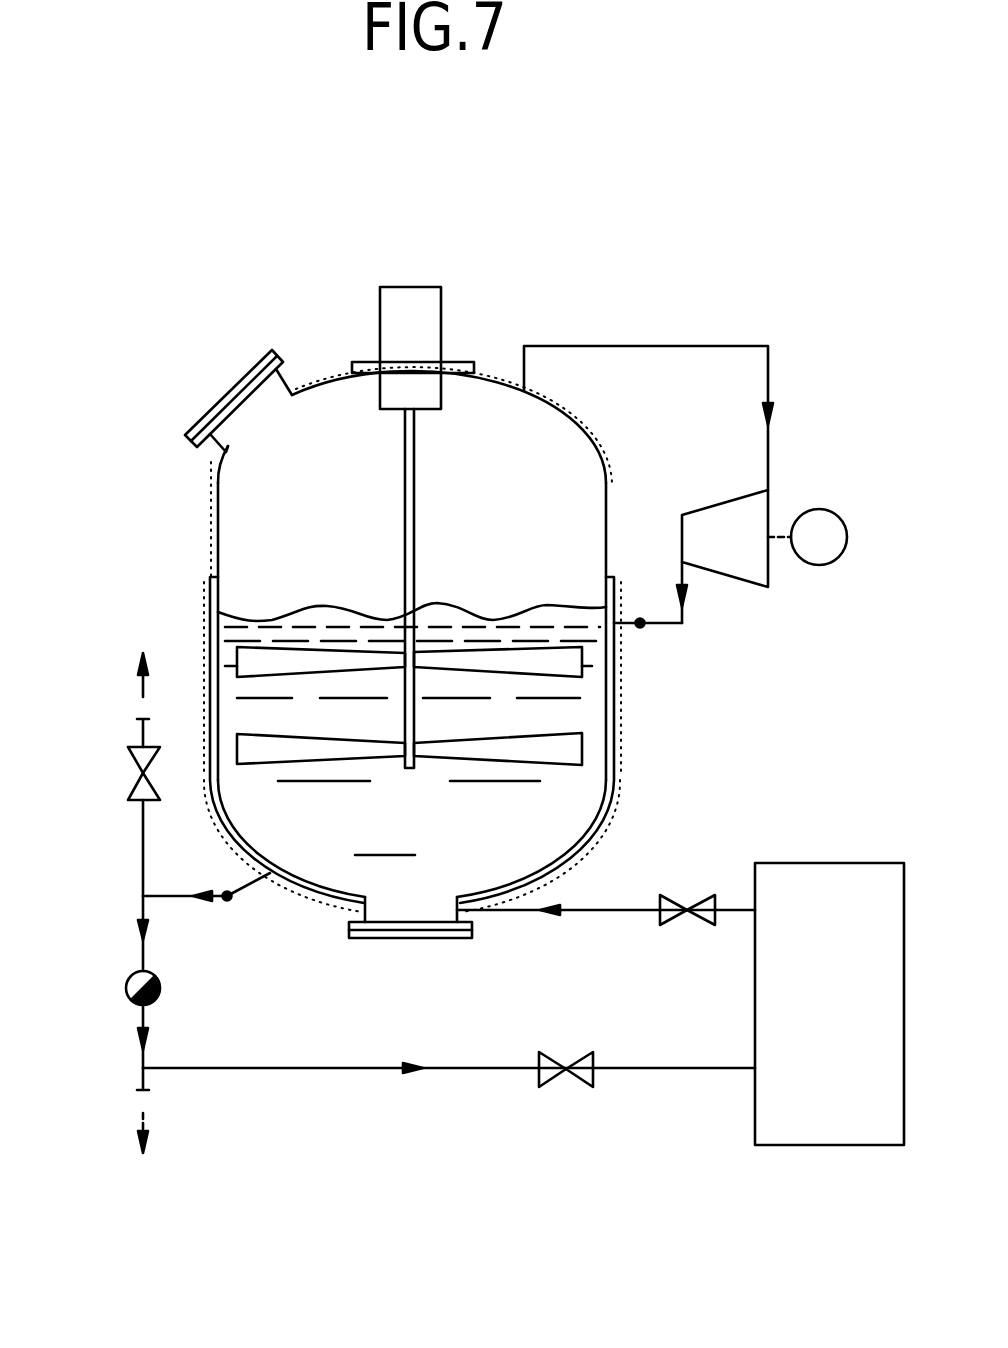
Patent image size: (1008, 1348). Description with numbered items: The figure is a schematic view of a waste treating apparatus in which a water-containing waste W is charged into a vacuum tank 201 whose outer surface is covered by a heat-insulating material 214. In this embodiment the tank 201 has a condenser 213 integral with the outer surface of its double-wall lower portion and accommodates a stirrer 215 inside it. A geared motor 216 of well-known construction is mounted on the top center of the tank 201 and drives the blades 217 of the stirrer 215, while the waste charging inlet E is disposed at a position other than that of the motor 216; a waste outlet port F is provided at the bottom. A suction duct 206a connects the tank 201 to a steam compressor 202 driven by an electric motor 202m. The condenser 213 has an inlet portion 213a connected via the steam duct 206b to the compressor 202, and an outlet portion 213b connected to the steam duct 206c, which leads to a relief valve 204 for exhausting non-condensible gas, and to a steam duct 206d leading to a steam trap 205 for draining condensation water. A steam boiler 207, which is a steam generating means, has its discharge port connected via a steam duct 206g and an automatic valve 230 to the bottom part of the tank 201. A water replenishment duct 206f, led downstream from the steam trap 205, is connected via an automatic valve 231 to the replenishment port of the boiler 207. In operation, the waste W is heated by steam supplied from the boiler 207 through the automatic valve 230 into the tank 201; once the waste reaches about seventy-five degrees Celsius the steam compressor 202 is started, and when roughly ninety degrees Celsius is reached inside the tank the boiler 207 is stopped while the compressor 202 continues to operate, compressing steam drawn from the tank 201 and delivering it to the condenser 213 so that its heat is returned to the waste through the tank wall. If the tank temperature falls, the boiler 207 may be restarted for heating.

The vacuum tank 201 is at (323, 372).
The steam compressor 202 is at (770, 572).
The electric motor 202m is at (862, 490).
The relief valve 204 is at (133, 787).
The steam trap 205 is at (133, 975).
The suction duct 206a is at (627, 346).
The steam duct 206b is at (682, 570).
The steam duct 206c is at (143, 882).
The steam duct 206d is at (143, 1058).
The water replenishment duct 206f is at (310, 1068).
The steam duct 206g is at (600, 912).
The steam boiler 207 is at (830, 1145).
The condenser 213 is at (620, 726).
The inlet portion 213a is at (640, 623).
The outlet portion 213b is at (227, 896).
The heat-insulating material 214 is at (210, 548).
The stirrer 215 is at (415, 532).
The geared motor 216 is at (427, 298).
The blades 217 is at (573, 750).
The automatic valve 230 is at (698, 897).
The automatic valve 231 is at (570, 1053).
The waste inlet port E is at (228, 387).
The waste outlet port F is at (390, 940).
The waste W is at (517, 607).